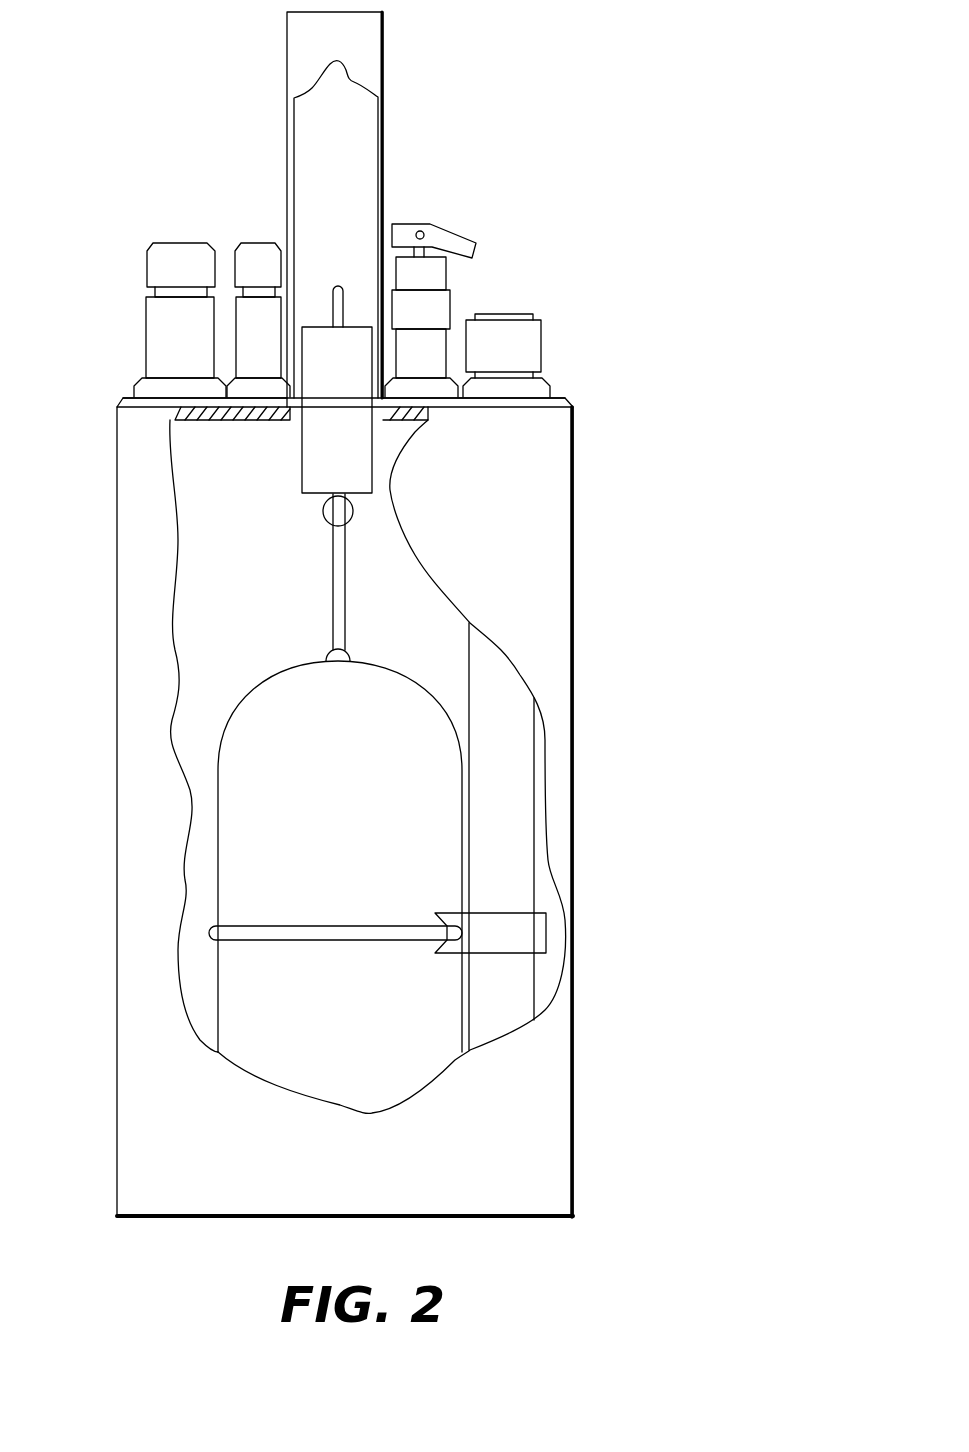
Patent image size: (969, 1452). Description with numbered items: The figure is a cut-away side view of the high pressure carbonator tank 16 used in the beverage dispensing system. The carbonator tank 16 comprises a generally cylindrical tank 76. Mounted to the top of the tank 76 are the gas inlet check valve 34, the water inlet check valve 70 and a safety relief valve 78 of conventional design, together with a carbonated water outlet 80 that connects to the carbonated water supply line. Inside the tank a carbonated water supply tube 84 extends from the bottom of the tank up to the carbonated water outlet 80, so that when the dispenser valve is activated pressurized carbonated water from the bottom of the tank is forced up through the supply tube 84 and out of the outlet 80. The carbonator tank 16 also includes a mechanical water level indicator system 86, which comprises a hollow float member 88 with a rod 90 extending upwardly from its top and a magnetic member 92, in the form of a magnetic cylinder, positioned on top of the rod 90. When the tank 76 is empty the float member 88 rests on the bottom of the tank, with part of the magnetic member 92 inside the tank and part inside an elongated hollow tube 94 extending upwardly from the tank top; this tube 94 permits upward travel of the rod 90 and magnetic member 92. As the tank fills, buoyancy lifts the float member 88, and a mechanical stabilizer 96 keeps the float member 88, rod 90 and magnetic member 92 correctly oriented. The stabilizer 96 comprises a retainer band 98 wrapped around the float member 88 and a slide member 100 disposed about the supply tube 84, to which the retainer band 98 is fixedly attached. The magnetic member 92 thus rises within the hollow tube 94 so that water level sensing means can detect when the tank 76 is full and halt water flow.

The carbonator tank 16 is at (620, 542).
The gas inlet check valve 34 is at (260, 265).
The water inlet check valve 70 is at (163, 266).
The tank 76 is at (550, 1128).
The safety relief valve 78 is at (438, 305).
The carbonated water outlet 80 is at (527, 347).
The carbonated water supply tube 84 is at (505, 783).
The mechanical water level indicator system 86 is at (264, 622).
The float member 88 is at (358, 778).
The rod 90 is at (345, 600).
The magnetic member 92 is at (316, 445).
The elongated hollow tube 94 is at (360, 37).
The mechanical stabilizer 96 is at (418, 1040).
The retainer band 98 is at (298, 930).
The slide member 100 is at (503, 934).